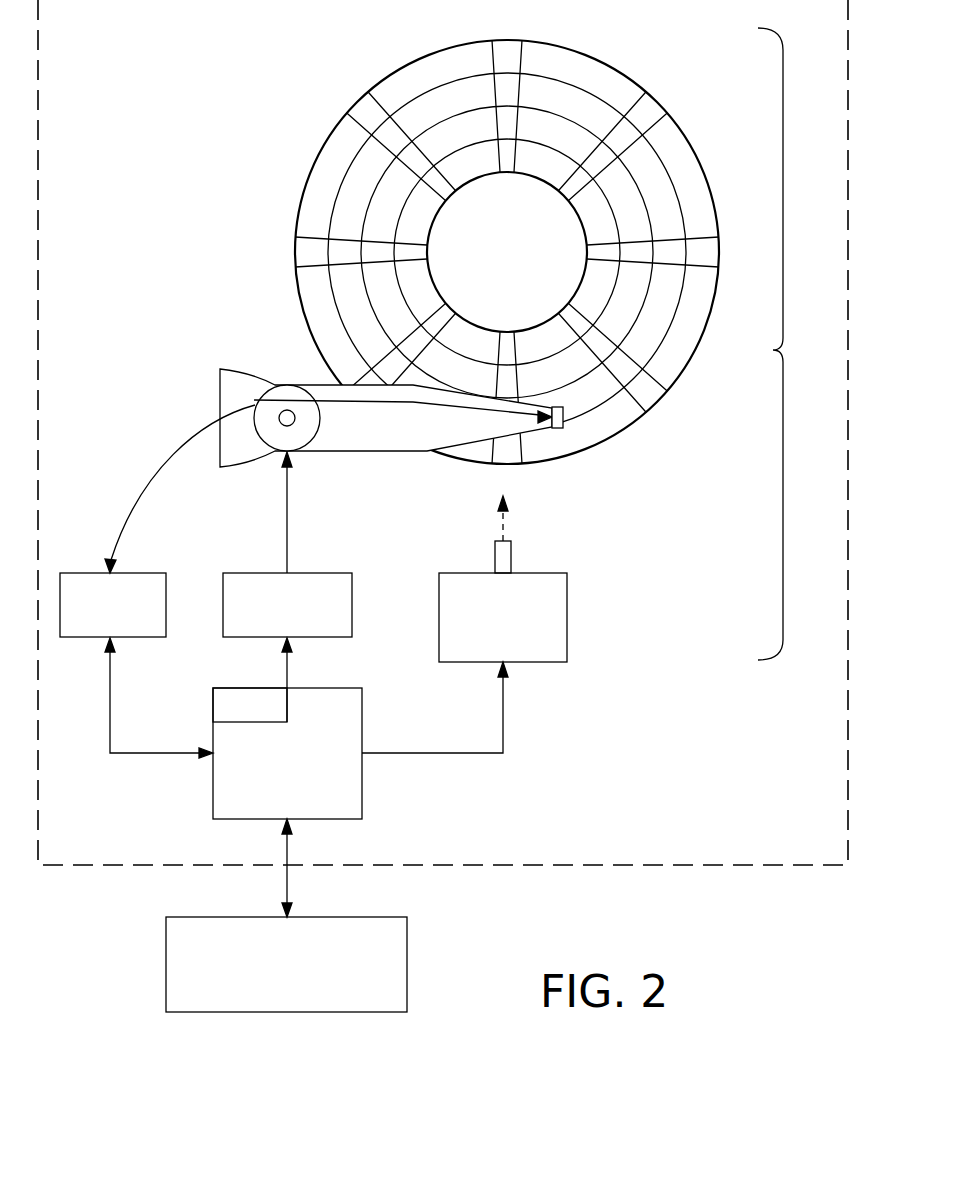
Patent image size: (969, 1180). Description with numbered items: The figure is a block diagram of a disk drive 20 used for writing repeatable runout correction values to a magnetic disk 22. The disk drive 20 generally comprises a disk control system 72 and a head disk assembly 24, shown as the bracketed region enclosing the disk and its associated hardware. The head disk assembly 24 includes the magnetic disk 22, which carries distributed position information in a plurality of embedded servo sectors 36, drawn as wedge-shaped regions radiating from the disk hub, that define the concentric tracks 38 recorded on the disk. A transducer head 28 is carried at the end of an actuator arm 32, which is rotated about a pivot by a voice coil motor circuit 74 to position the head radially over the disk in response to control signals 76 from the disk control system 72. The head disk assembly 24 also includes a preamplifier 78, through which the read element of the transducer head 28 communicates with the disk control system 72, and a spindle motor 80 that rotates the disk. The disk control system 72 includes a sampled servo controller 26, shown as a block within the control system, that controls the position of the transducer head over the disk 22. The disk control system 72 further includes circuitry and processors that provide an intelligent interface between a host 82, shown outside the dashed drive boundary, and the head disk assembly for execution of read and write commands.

The disk drive 20 is at (732, 865).
The magnetic disk 22 is at (469, 233).
The head disk assembly 24 is at (796, 344).
The sampled servo controller 26 is at (235, 717).
The transducer head 28 is at (557, 418).
The actuator arm 32 is at (417, 444).
The embedded servo sectors 36 is at (362, 117).
The concentric tracks 38 is at (332, 163).
The disk control system 72 is at (273, 804).
The voice coil motor circuit 74 is at (273, 629).
The control signals 76 is at (289, 671).
The preamplifier 78 is at (99, 629).
The spindle motor 80 is at (489, 655).
The host 82 is at (273, 989).